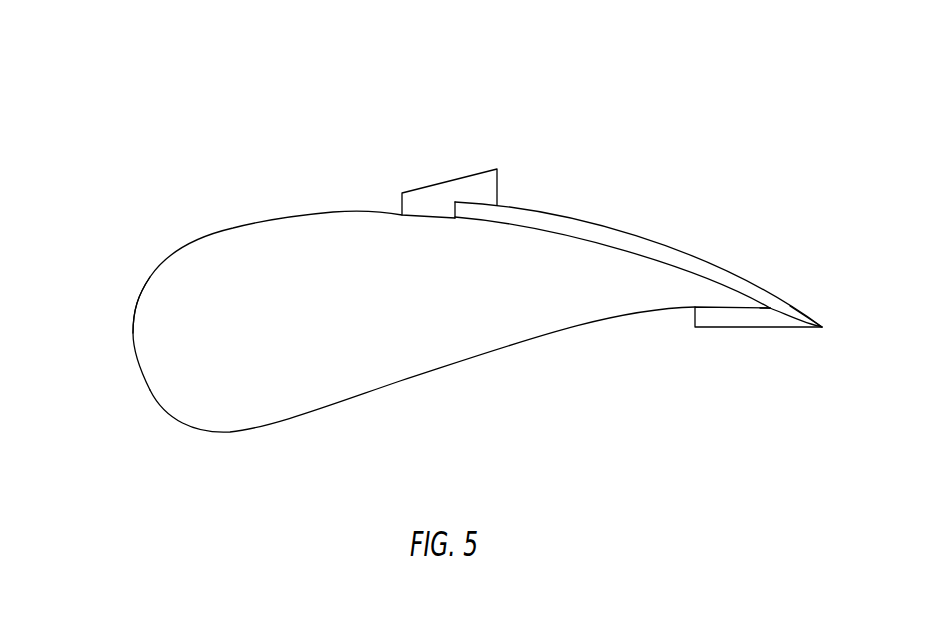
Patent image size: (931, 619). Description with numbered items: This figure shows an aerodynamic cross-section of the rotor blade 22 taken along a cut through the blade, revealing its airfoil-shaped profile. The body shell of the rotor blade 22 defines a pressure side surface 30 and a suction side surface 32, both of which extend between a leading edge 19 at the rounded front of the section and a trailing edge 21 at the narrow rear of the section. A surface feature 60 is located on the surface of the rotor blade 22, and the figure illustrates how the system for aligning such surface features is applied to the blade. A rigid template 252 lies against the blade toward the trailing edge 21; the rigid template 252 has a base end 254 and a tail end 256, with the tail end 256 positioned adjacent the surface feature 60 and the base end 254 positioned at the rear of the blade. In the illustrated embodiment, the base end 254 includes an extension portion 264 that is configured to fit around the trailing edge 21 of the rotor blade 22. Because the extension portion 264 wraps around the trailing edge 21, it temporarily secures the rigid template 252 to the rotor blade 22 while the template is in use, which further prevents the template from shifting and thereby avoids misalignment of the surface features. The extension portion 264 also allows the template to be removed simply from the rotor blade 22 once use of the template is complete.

The rotor blade 22 is at (150, 100).
The leading edge 19 is at (135, 335).
The pressure side surface 30 is at (265, 218).
The suction side surface 32 is at (327, 410).
The surface feature 60 is at (441, 184).
The rigid template 252 is at (676, 251).
The tail end 256 is at (478, 213).
The base end 254 is at (790, 308).
The extension portion 264 is at (712, 329).
The trailing edge 21 is at (768, 310).